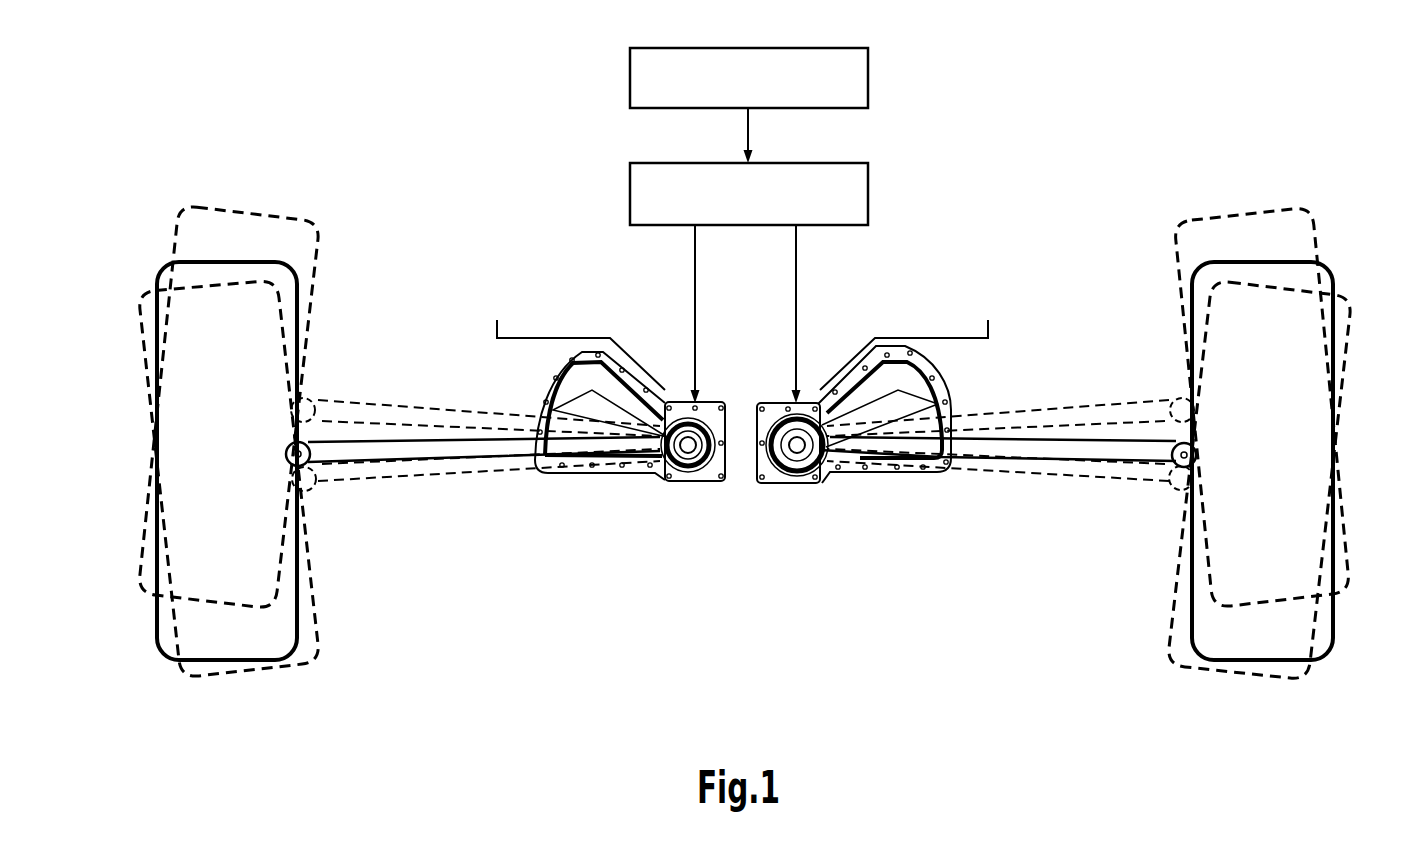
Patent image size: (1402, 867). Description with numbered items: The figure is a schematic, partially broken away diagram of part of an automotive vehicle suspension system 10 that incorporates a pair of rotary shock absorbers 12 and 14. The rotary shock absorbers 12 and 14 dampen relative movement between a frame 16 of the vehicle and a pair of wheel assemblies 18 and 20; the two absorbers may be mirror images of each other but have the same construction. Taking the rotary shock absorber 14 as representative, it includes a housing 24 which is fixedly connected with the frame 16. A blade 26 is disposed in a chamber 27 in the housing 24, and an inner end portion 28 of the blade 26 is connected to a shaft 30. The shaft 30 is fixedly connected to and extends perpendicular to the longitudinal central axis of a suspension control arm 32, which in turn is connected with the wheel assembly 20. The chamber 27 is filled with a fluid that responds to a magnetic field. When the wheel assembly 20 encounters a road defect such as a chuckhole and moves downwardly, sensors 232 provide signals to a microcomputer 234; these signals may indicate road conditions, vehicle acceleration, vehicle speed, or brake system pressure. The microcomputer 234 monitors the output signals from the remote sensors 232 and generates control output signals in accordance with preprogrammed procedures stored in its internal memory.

The automotive vehicle suspension system 10 is at (1054, 176).
The rotary shock absorber 12 is at (650, 498).
The rotary shock absorber 14 is at (872, 441).
The frame 16 is at (560, 337).
The wheel assembly 18 is at (195, 177).
The wheel assembly 20 is at (1338, 234).
The housing 24 is at (903, 480).
The blade 26 is at (905, 413).
The chamber 27 is at (900, 375).
The inner end portion 28 is at (795, 430).
The shaft 30 is at (795, 450).
The suspension control arm 32 is at (1082, 446).
The sensors 232 is at (865, 87).
The microcomputer 234 is at (865, 205).